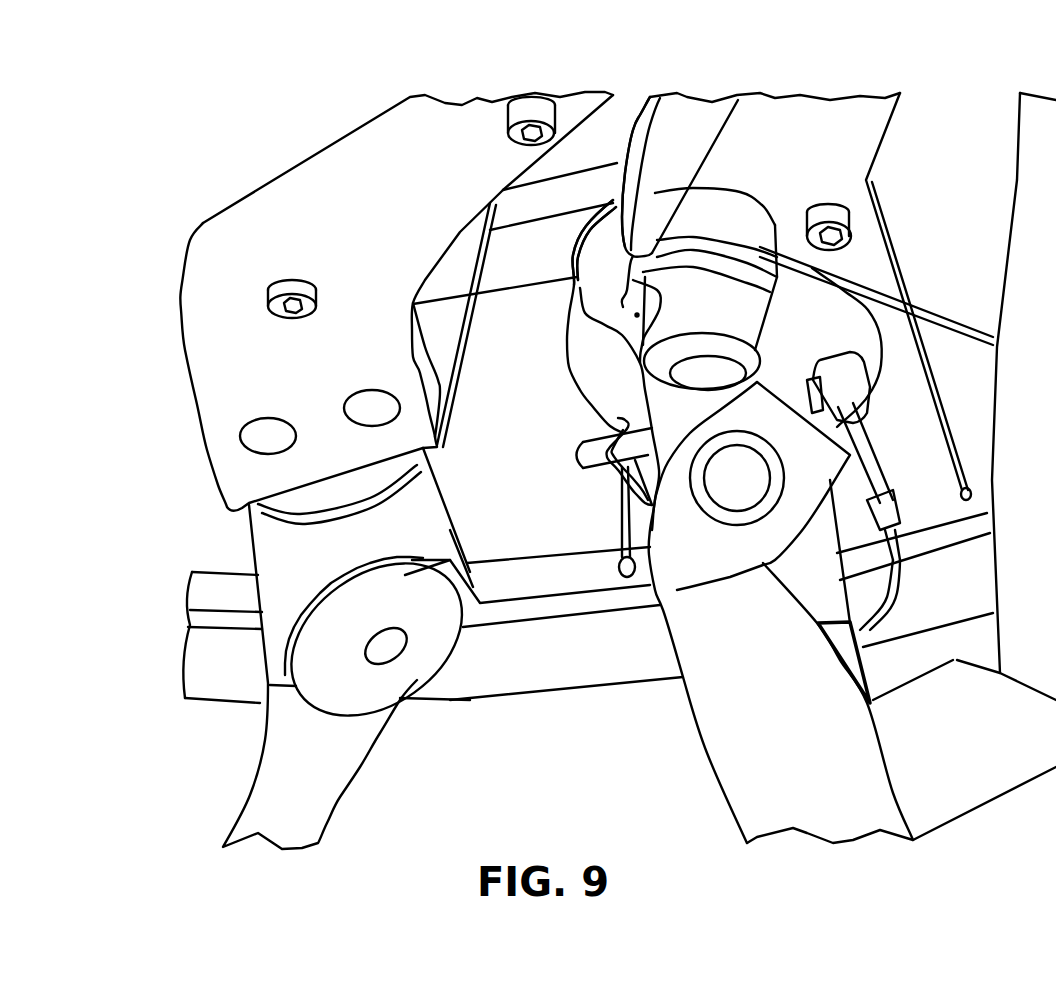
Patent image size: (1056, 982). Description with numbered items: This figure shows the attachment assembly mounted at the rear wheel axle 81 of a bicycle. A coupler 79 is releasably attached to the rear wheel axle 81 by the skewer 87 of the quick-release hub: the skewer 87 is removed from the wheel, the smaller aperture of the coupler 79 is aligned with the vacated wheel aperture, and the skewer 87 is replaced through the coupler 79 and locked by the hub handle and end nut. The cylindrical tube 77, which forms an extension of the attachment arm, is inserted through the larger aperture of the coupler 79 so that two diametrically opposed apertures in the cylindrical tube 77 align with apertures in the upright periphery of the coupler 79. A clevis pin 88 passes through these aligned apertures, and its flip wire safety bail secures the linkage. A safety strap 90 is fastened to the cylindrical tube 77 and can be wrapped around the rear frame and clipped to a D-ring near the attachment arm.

The cylindrical tube 77 is at (818, 588).
The coupler 79 is at (838, 298).
The rear wheel axle 81 is at (607, 237).
The skewer 87 is at (695, 288).
The clevis pin 88 is at (583, 457).
The safety strap 90 is at (723, 755).